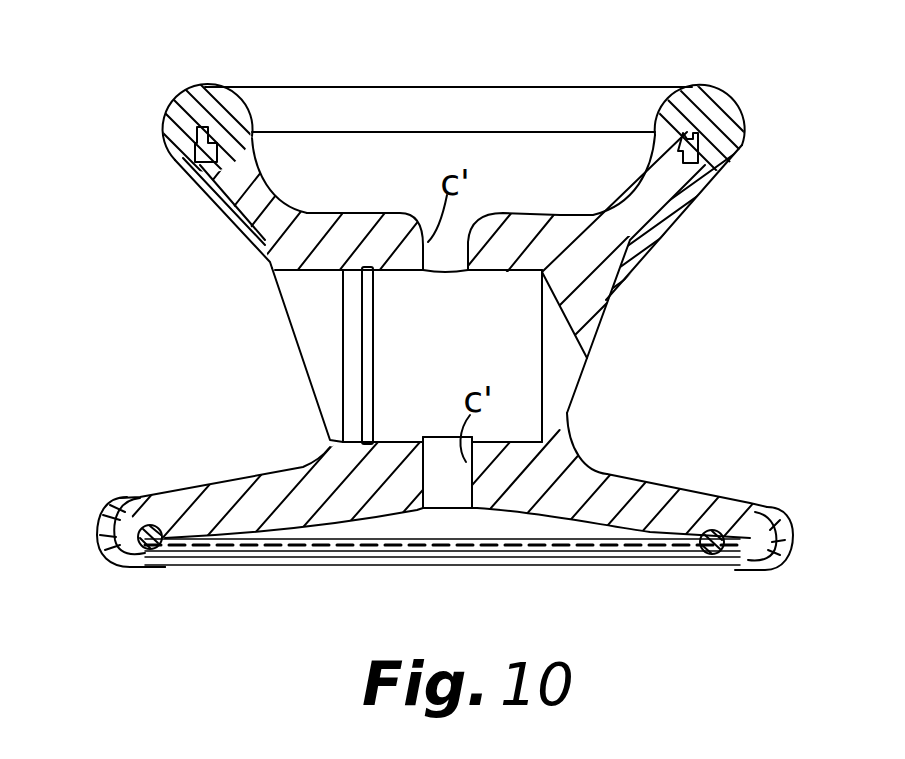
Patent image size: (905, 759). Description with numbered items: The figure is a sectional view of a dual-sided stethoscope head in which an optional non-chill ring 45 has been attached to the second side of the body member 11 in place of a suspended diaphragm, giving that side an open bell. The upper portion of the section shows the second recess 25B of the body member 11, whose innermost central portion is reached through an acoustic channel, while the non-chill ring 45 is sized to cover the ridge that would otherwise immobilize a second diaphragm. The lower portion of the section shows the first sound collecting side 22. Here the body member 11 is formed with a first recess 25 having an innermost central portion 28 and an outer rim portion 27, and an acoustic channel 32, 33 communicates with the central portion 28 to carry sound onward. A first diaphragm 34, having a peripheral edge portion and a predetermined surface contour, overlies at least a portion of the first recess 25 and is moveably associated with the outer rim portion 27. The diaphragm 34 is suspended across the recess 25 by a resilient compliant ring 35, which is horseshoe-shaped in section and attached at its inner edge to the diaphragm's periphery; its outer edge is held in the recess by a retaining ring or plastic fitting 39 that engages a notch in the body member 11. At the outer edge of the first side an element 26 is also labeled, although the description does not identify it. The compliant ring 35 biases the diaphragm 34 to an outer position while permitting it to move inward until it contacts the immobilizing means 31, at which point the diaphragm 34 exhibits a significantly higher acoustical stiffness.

The non-chill ring 45 is at (737, 107).
The second recess 25B is at (332, 213).
The acoustic channel 32 is at (306, 272).
The acoustic channel 33 is at (400, 288).
The body member 11 is at (629, 287).
The outer rim portion 27 is at (150, 532).
The left end fitting 26 is at (102, 540).
The compliant ring 35 is at (130, 576).
The first recess 25 is at (296, 527).
The first diaphragm 34 is at (430, 546).
The innermost central portion 28 is at (507, 512).
The immobilizing means 31 is at (706, 540).
The retaining ring 39 is at (792, 530).
The first sound collecting side 22 is at (617, 619).